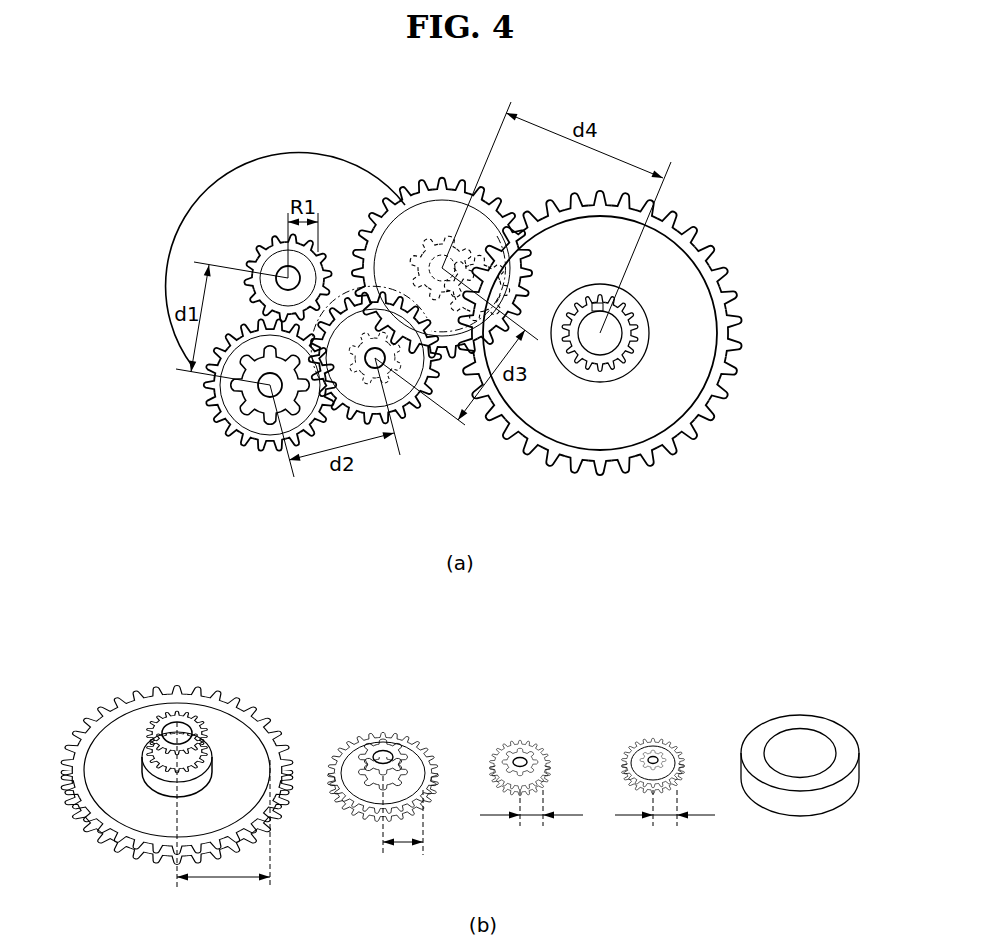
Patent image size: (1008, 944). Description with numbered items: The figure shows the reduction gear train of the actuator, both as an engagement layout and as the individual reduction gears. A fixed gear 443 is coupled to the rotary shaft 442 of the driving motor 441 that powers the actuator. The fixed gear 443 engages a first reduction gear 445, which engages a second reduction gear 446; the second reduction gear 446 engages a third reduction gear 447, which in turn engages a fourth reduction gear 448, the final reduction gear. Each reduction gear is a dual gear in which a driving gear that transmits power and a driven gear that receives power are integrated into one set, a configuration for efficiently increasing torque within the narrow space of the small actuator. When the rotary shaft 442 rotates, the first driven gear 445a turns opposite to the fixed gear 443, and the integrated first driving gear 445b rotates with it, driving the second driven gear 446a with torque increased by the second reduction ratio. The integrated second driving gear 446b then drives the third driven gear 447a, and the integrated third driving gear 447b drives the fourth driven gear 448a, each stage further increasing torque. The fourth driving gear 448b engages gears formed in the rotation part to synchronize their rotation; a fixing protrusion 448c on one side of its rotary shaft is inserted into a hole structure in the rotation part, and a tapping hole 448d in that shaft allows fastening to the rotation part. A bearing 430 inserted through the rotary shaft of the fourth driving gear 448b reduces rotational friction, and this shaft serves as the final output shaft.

The bearing 430 is at (608, 380).
The driving motor 441 is at (262, 152).
The rotary shaft 442 is at (278, 268).
The fixed gear 443 is at (323, 253).
The first reduction gear 445 is at (314, 575).
The first driven gear 445a is at (205, 383).
The first driving gear 445b is at (210, 408).
The second reduction gear 446 is at (498, 563).
The second driven gear 446a is at (392, 394).
The second driving gear 446b is at (383, 365).
The third reduction gear 447 is at (425, 475).
The third driven gear 447a is at (395, 200).
The third driving gear 447b is at (427, 235).
The fourth reduction gear 448 is at (450, 542).
The fourth driven gear 448a is at (635, 333).
The fourth driving gear 448b is at (634, 370).
The fixing protrusion 448c is at (618, 300).
The tapping hole 448d is at (718, 374).